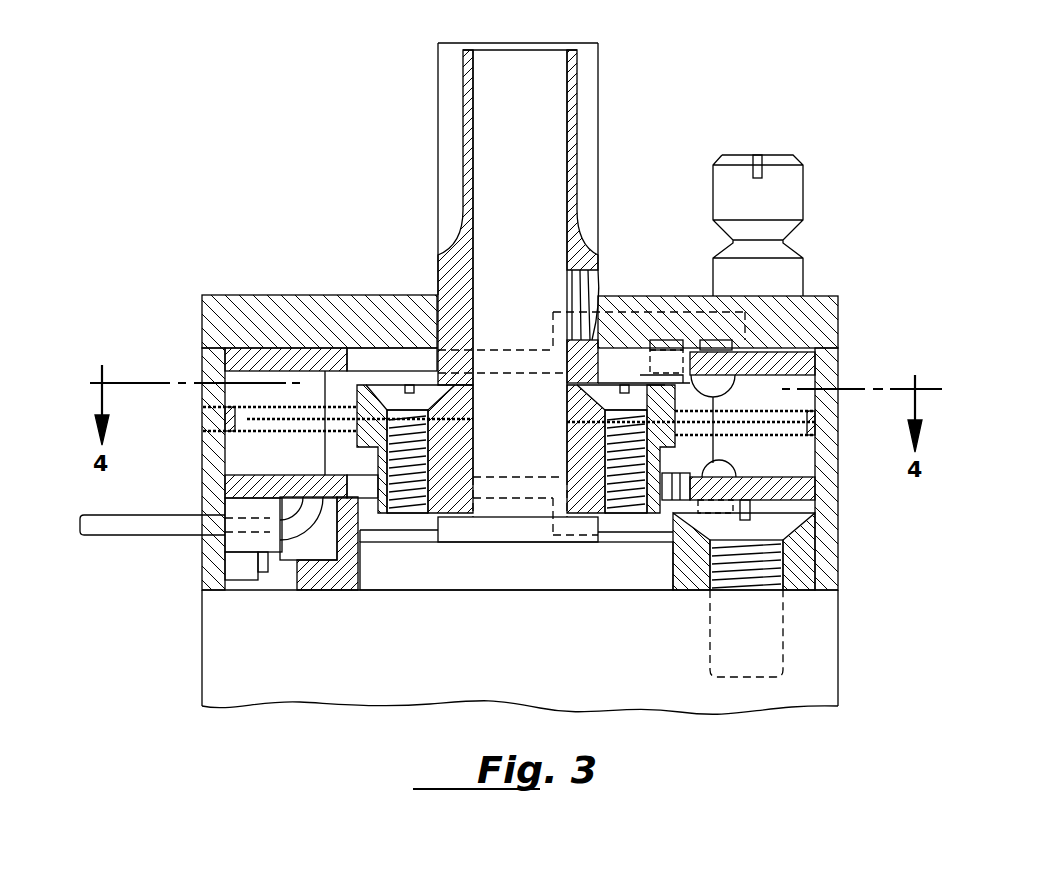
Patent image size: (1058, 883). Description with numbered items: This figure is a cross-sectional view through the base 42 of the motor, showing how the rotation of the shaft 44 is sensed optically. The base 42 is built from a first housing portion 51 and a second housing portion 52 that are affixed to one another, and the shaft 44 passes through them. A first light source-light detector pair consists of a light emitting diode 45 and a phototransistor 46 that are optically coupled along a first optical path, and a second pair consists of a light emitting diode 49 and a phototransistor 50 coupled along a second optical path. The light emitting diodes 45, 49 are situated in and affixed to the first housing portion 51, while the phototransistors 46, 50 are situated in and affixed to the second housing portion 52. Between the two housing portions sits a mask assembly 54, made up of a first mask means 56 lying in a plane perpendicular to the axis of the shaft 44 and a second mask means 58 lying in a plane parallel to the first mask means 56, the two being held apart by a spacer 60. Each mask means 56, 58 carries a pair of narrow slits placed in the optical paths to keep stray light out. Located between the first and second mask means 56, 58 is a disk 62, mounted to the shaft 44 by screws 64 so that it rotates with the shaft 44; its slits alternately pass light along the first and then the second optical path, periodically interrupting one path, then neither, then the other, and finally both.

The base 42 is at (515, 661).
The shaft 44 is at (572, 52).
The light emitting diode 45 is at (688, 393).
The phototransistor 46 is at (670, 508).
The light emitting diode 49 is at (757, 337).
The phototransistor 50 is at (728, 477).
The first housing portion 51 is at (217, 310).
The second housing portion 52 is at (827, 530).
The mask assembly 54 is at (202, 418).
The first mask means 56 is at (835, 355).
The second mask means 58 is at (800, 440).
The spacer 60 is at (822, 427).
The disk 62 is at (307, 418).
The screws 64 is at (388, 392).